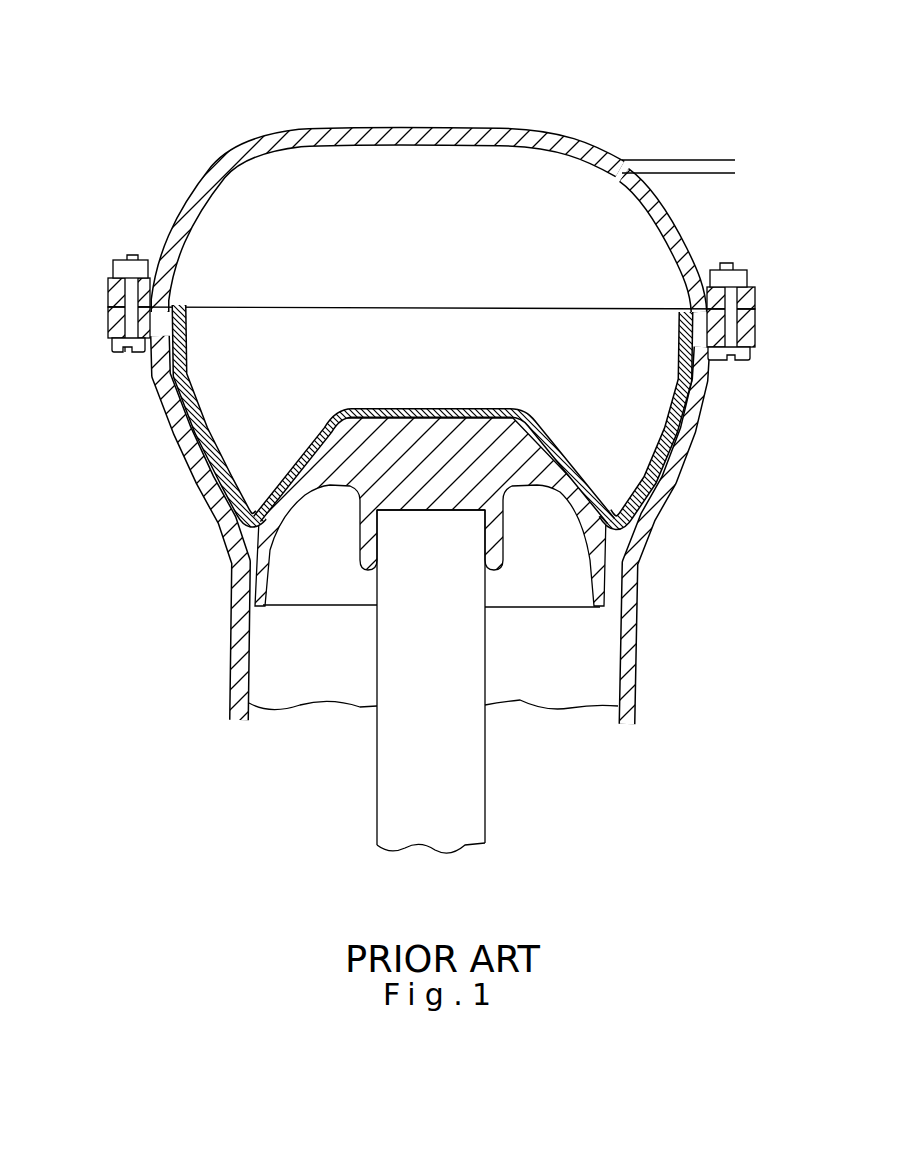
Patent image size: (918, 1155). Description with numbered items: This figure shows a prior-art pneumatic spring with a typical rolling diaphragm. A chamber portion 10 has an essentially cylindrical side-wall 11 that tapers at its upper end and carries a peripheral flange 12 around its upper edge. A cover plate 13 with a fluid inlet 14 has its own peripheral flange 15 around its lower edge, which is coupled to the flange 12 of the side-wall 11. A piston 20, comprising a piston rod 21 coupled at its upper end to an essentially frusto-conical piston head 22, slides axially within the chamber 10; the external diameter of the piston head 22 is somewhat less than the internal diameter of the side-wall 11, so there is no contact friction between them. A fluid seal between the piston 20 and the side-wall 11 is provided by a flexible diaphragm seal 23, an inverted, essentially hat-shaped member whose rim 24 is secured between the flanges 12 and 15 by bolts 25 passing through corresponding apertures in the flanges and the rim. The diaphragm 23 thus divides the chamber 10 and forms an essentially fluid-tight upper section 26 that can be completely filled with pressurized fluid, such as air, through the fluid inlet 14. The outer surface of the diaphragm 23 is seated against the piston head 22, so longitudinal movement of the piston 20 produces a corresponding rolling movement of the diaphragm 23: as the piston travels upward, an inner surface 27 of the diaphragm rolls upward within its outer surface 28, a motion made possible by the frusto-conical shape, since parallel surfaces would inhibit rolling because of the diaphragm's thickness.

The chamber portion 10 is at (430, 116).
The side-wall 11 is at (628, 694).
The peripheral flange 12 is at (755, 338).
The cover plate 13 is at (490, 138).
The fluid inlet 14 is at (683, 162).
The peripheral flange 15 is at (755, 300).
The piston 20 is at (372, 815).
The piston rod 21 is at (478, 800).
The piston head 22 is at (511, 486).
The flexible diaphragm seal 23 is at (433, 404).
The rim 24 is at (108, 307).
The bolts 25 is at (120, 352).
The upper section 26 is at (452, 239).
The inner surface 27 is at (602, 484).
The outer surface 28 is at (250, 534).